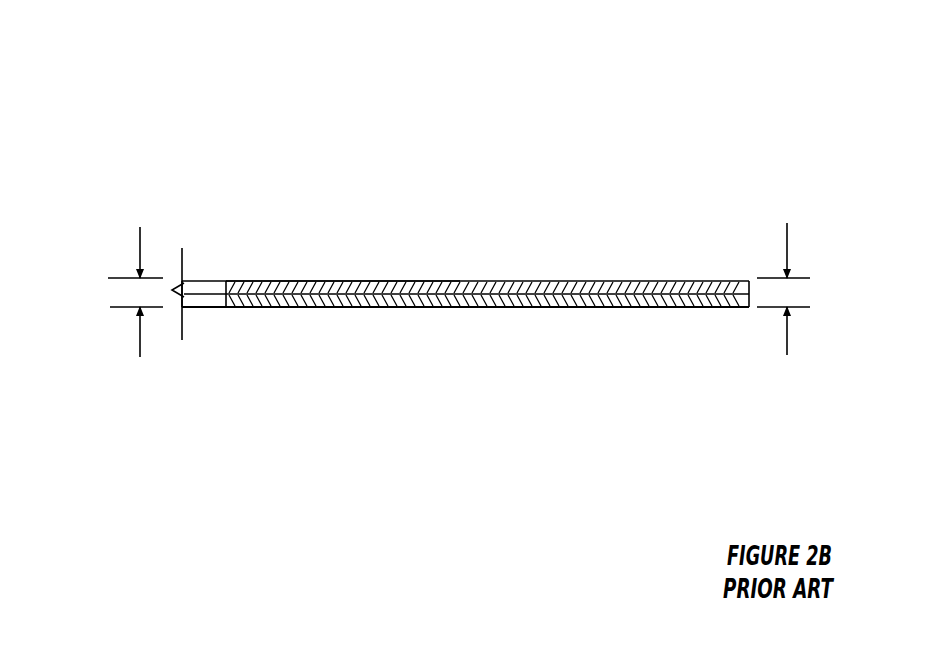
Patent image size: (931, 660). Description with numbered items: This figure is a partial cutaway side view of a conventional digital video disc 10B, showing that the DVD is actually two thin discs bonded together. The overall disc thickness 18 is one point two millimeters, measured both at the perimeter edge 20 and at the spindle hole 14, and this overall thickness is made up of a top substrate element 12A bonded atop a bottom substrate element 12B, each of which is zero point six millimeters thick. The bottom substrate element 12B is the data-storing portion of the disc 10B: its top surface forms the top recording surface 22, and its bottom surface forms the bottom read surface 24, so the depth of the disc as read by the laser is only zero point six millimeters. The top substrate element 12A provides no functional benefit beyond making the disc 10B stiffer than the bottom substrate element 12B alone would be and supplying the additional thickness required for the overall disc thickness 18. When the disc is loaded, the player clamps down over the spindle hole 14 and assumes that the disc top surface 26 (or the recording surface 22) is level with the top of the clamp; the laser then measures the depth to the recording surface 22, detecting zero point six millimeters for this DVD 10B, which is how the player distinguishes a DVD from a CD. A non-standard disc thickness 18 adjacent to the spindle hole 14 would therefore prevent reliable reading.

The digital video disc 10B is at (195, 138).
The top substrate element 12A is at (562, 279).
The bottom substrate element 12B is at (508, 309).
The spindle hole 14 is at (205, 272).
The overall disc thickness 18 is at (140, 296).
The perimeter edge 20 is at (748, 279).
The top recording surface 22 is at (460, 280).
The bottom read surface 24 is at (298, 309).
The disc top surface 26 is at (333, 280).